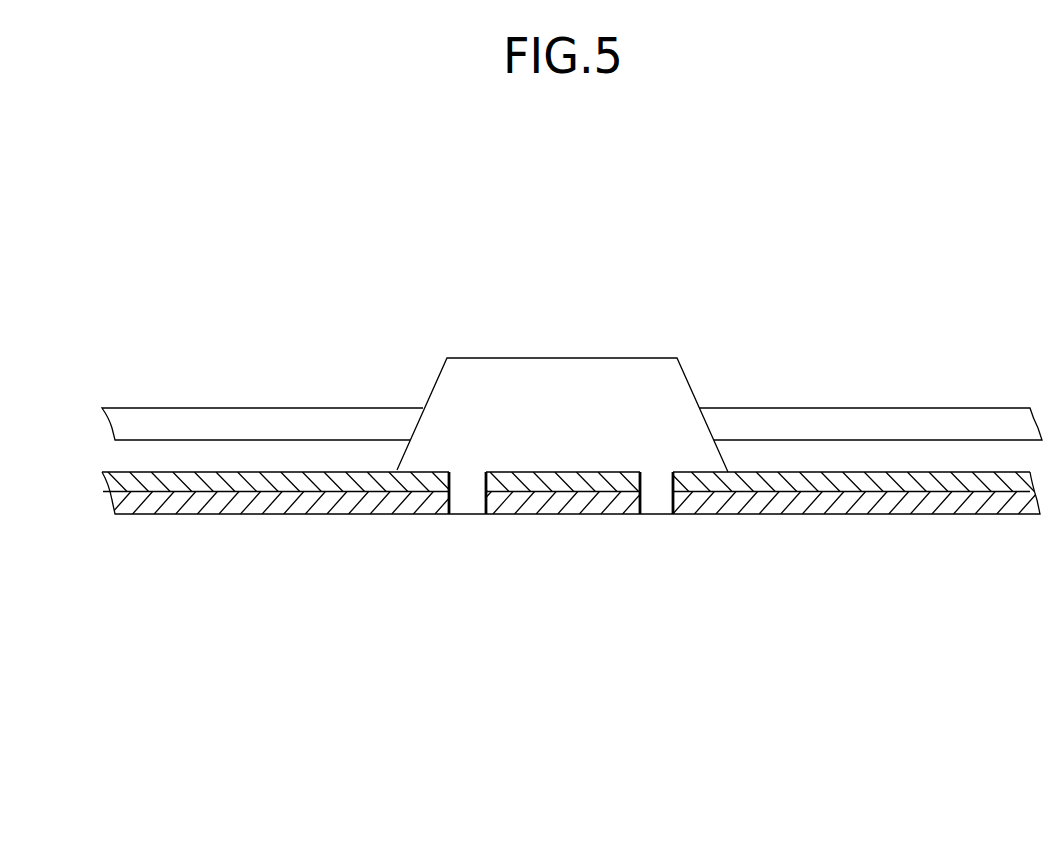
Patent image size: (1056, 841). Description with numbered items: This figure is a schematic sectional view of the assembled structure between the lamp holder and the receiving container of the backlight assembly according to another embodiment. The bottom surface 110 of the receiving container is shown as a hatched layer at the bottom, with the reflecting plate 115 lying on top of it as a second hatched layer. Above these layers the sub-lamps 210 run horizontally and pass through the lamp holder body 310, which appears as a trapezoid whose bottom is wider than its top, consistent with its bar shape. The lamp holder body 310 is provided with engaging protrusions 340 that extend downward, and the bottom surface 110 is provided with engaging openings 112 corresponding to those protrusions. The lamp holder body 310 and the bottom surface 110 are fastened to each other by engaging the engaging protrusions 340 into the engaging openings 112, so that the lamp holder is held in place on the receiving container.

The bottom surface 110 is at (355, 500).
The engaging openings 112 is at (487, 497).
The reflecting plate 115 is at (218, 478).
The sub-lamps 210 is at (176, 420).
The lamp holder body 310 is at (555, 370).
The engaging protrusions 340 is at (469, 500).